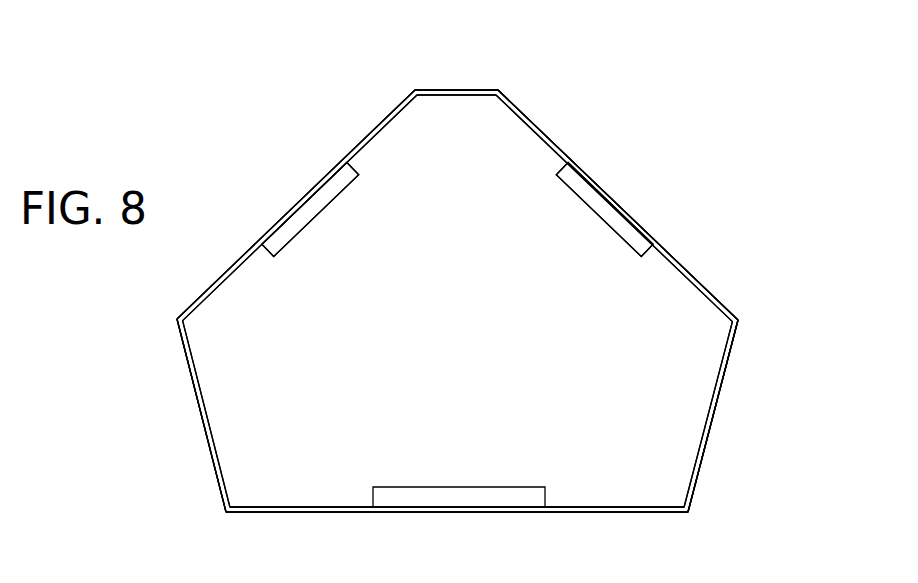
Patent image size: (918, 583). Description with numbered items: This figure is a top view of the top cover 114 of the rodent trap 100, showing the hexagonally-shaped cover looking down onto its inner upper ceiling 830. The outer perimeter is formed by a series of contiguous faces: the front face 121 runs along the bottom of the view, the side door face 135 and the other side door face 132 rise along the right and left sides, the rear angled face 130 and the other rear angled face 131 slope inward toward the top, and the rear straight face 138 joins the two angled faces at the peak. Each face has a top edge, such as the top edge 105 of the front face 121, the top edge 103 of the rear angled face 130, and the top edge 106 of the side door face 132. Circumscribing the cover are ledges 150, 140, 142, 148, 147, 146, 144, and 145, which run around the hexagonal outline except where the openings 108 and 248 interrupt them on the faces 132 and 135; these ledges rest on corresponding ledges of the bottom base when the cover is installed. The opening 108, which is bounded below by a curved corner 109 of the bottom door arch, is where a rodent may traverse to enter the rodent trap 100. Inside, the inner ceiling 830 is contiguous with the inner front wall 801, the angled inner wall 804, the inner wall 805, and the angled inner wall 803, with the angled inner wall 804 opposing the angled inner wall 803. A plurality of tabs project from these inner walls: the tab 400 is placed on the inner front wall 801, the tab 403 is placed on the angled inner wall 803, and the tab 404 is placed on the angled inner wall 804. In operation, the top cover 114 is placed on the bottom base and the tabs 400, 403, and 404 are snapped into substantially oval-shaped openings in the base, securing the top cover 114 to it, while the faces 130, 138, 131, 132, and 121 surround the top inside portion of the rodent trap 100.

The rodent trap 100 is at (684, 96).
The top edge 103 is at (643, 226).
The top edge 105 is at (458, 513).
The top edge 106 is at (206, 433).
The opening 108 is at (216, 473).
The curved corner 109 is at (712, 420).
The top cover 114 is at (719, 213).
The front face 121 is at (610, 516).
The rear angled face 130 is at (562, 141).
The rear angled face 131 is at (355, 141).
The side door face 132 is at (178, 367).
The side door face 135 is at (741, 366).
The rear straight face 138 is at (457, 89).
The ledge 140 is at (690, 514).
The ledge 142 is at (745, 318).
The ledge 144 is at (173, 320).
The ledge 145 is at (227, 512).
The ledge 146 is at (316, 188).
The ledge 147 is at (431, 89).
The ledge 148 is at (694, 277).
The ledge 150 is at (343, 513).
The opening 248 is at (701, 472).
The tab 400 is at (459, 487).
The tab 403 is at (585, 203).
The tab 404 is at (330, 203).
The inner front wall 801 is at (296, 507).
The angled inner wall 803 is at (540, 137).
The angled inner wall 804 is at (230, 278).
The inner wall 805 is at (478, 95).
The inner ceiling 830 is at (439, 365).